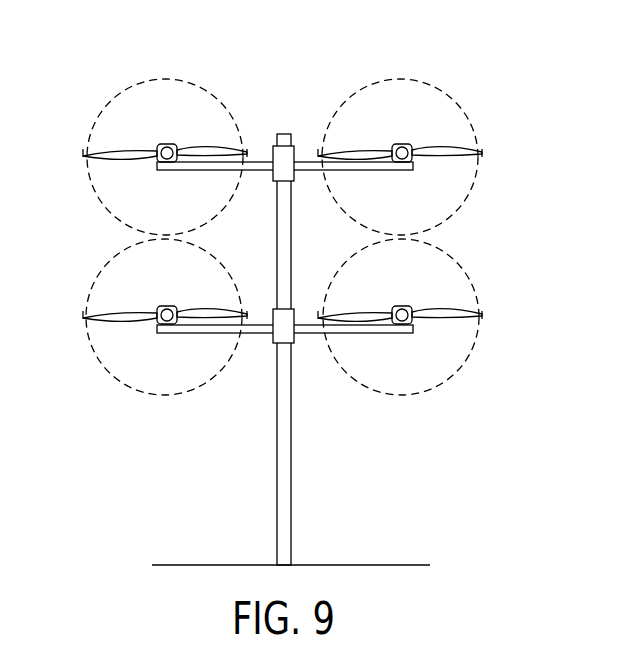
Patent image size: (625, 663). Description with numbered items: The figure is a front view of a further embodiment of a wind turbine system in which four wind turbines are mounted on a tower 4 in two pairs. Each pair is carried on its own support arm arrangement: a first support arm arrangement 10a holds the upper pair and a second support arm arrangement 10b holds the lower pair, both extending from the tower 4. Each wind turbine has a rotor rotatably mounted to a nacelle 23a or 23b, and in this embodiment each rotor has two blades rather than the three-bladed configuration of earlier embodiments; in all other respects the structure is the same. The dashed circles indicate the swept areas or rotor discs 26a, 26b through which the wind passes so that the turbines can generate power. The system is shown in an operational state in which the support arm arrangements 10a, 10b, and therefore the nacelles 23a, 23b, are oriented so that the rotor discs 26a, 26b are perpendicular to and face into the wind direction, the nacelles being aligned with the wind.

The tower 4 is at (277, 505).
The first support arm arrangement 10a is at (373, 200).
The second support arm arrangement 10b is at (343, 342).
The nacelle 23a is at (165, 144).
The nacelle 23b is at (166, 306).
The rotor disc 26a is at (158, 79).
The rotor disc 26b is at (158, 394).